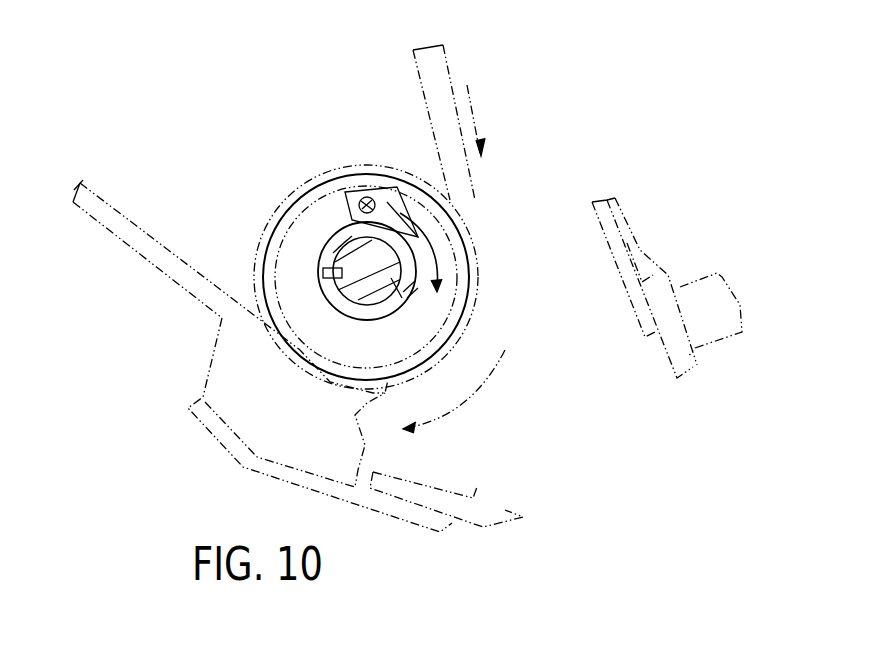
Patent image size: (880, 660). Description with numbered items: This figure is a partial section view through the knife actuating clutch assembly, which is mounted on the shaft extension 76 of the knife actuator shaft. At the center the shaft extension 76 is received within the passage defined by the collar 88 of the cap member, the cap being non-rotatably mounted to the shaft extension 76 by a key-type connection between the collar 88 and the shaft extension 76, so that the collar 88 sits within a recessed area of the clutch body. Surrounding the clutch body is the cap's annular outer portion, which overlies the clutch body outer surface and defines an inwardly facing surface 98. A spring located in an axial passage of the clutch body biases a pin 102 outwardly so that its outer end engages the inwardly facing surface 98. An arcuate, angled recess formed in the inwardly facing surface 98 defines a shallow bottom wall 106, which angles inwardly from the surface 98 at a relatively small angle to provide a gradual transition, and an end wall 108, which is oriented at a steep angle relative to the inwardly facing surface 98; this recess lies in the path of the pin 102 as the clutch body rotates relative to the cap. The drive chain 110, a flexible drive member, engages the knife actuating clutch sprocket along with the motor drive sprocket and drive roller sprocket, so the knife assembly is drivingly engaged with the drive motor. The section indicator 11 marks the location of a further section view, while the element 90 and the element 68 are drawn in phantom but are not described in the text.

The section line 11- 11 is at (213, 192).
The pedal arm 68 is at (477, 487).
The shaft extension 76 is at (388, 278).
The collar 88 is at (325, 239).
The bushing ring 90 is at (327, 285).
The inwardly facing surface 98 is at (315, 218).
The pin 102 is at (372, 196).
The shallow bottom wall 106 is at (390, 200).
The end wall 108 is at (353, 190).
The drive chain 110 is at (150, 262).